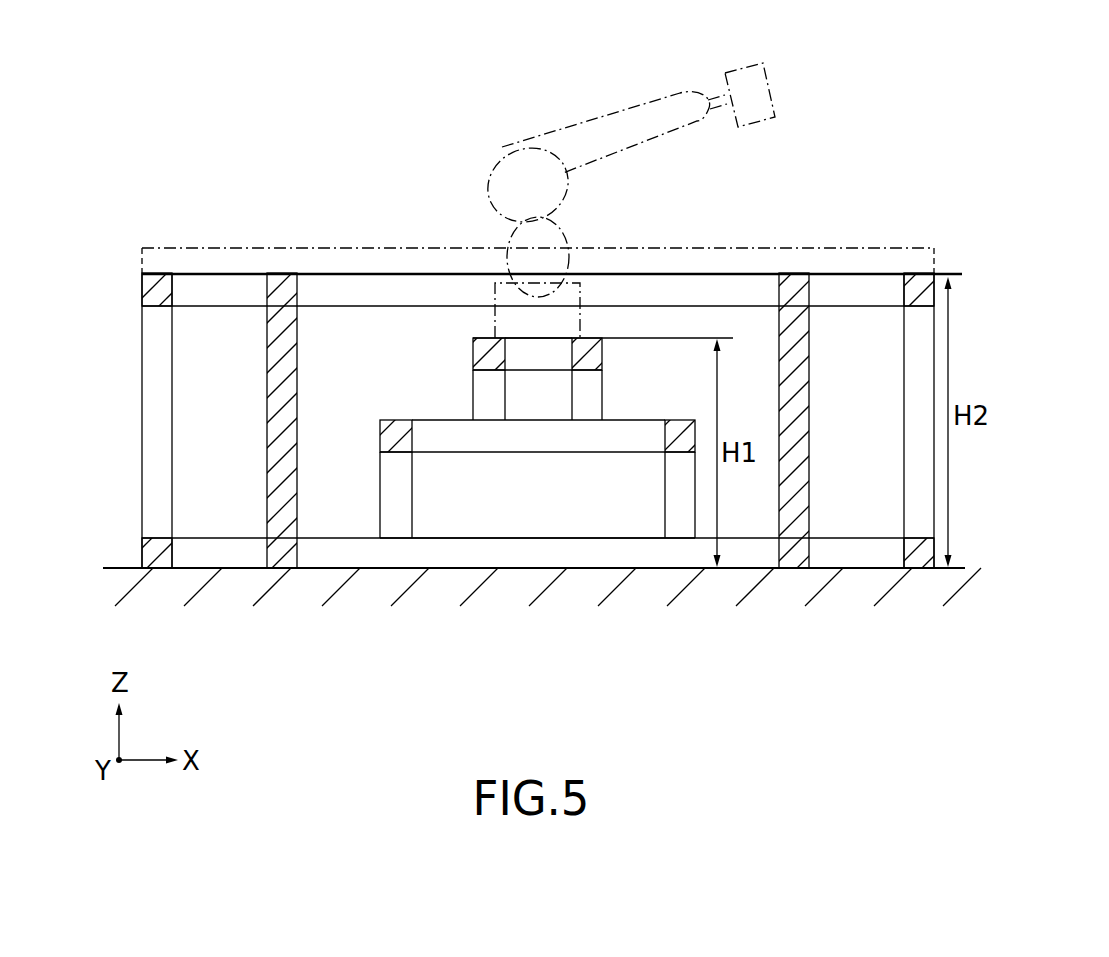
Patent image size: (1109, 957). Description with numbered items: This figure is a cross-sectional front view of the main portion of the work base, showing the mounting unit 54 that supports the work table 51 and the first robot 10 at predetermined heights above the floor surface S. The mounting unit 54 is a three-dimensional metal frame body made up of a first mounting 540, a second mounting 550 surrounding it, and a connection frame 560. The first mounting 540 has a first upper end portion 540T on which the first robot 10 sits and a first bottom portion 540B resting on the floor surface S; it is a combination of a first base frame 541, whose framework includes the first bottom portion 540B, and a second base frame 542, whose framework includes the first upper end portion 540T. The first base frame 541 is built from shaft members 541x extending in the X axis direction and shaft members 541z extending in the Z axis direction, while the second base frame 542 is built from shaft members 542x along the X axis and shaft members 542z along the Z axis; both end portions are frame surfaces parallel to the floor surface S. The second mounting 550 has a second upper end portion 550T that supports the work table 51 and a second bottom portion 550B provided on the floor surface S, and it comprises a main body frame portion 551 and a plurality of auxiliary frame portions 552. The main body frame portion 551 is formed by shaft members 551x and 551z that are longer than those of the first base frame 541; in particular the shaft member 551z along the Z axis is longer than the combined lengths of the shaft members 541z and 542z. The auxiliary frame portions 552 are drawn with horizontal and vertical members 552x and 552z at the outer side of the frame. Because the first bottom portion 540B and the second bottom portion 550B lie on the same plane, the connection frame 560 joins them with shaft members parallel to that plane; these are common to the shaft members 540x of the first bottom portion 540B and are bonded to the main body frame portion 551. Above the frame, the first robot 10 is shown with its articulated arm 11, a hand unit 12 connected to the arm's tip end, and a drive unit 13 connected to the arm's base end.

The first robot 10 is at (557, 86).
The articulated arm 11 is at (632, 97).
The hand unit 12 is at (740, 72).
The drive unit 13 is at (496, 283).
The mounting unit 54 is at (257, 160).
The work table 51 is at (927, 248).
The second mounting 550 is at (740, 200).
The second upper end portion 550T is at (256, 273).
The second bottom portion 550B is at (232, 568).
The main body frame portion 551 is at (747, 273).
The shaft member 551x is at (343, 280).
The shaft member 551z is at (270, 433).
The auxiliary frame portion 552 is at (847, 273).
The outer frame horizontal portion 552x is at (172, 273).
The outer frame vertical portion 552z is at (157, 433).
The connection frame 560 is at (333, 568).
The first mounting 540 is at (595, 200).
The first upper end portion 540T is at (484, 338).
The first bottom portion 540B is at (478, 568).
The shaft member 540x is at (610, 558).
The first base frame 541 is at (650, 418).
The shaft member 541x is at (610, 448).
The shaft member 541z is at (383, 462).
The second base frame 542 is at (588, 337).
The shaft member 542x is at (532, 367).
The shaft member 542z is at (475, 378).
The floor surface S is at (120, 568).